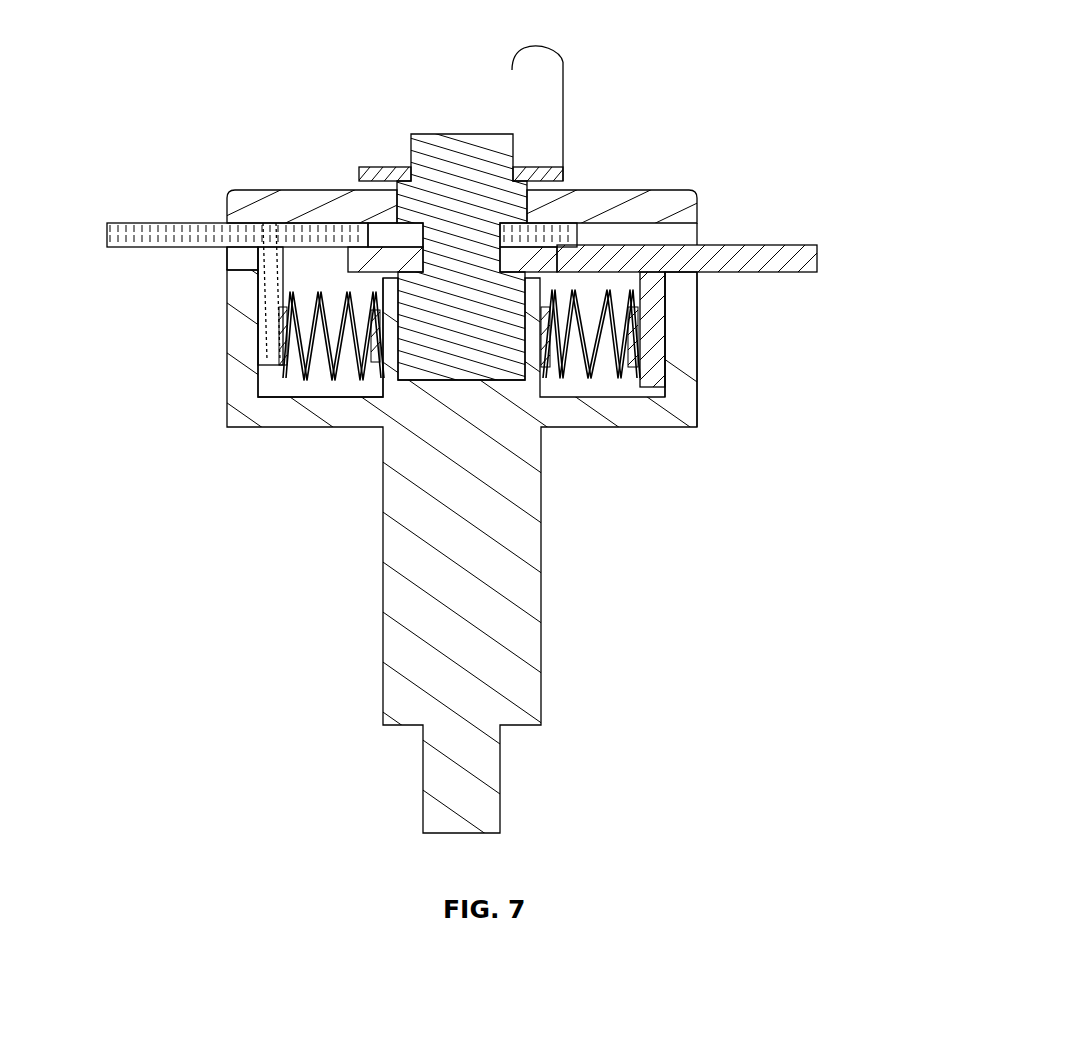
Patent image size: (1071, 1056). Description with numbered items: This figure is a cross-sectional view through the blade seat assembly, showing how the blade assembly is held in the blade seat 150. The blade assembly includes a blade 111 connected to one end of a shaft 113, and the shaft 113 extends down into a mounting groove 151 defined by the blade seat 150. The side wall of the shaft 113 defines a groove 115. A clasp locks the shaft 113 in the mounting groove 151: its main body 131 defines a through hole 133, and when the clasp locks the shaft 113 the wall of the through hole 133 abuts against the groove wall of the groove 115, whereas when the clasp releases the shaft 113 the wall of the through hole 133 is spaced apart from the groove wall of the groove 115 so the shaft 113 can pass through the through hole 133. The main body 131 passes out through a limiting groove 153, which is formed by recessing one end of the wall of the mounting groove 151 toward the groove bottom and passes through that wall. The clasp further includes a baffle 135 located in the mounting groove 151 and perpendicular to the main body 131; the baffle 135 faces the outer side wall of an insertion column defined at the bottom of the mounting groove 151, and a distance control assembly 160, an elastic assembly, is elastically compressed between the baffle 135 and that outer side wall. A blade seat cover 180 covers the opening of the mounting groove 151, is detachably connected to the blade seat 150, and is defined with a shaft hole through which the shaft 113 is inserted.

The blade 111 is at (368, 162).
The shaft 113 is at (478, 170).
The groove 115 is at (390, 262).
The main body 131 is at (753, 263).
The through hole 133 is at (378, 221).
The baffle 135 is at (660, 365).
The blade seat 150 is at (503, 570).
The mounting groove 151 is at (300, 398).
The limiting groove 153 is at (212, 259).
The distance control assembly 160 is at (640, 340).
The blade seat cover 180 is at (650, 210).